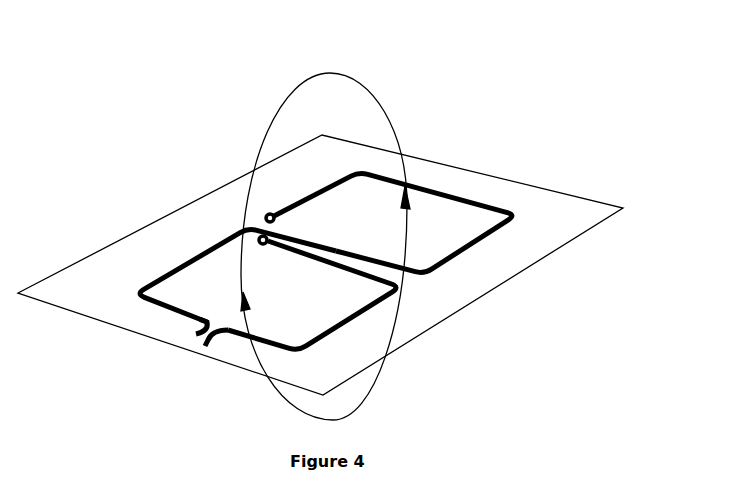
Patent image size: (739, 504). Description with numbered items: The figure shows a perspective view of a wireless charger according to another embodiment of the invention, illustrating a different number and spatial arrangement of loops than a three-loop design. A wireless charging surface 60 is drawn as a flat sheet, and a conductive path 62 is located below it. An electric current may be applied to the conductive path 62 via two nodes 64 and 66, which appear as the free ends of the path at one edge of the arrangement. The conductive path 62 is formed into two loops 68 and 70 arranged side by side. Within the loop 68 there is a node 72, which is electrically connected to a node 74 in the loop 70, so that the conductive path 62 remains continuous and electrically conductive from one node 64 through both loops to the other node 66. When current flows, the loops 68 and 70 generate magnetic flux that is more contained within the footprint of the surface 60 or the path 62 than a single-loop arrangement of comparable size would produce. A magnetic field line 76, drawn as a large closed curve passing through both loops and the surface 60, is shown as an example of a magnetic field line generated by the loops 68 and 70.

The wireless charging surface 60 is at (552, 212).
The conductive path 62 is at (428, 290).
The node 64 is at (196, 335).
The node 66 is at (206, 346).
The loop 68 is at (250, 281).
The loop 70 is at (389, 173).
The node 72 is at (265, 246).
The node 74 is at (281, 219).
The magnetic field line 76 is at (363, 83).